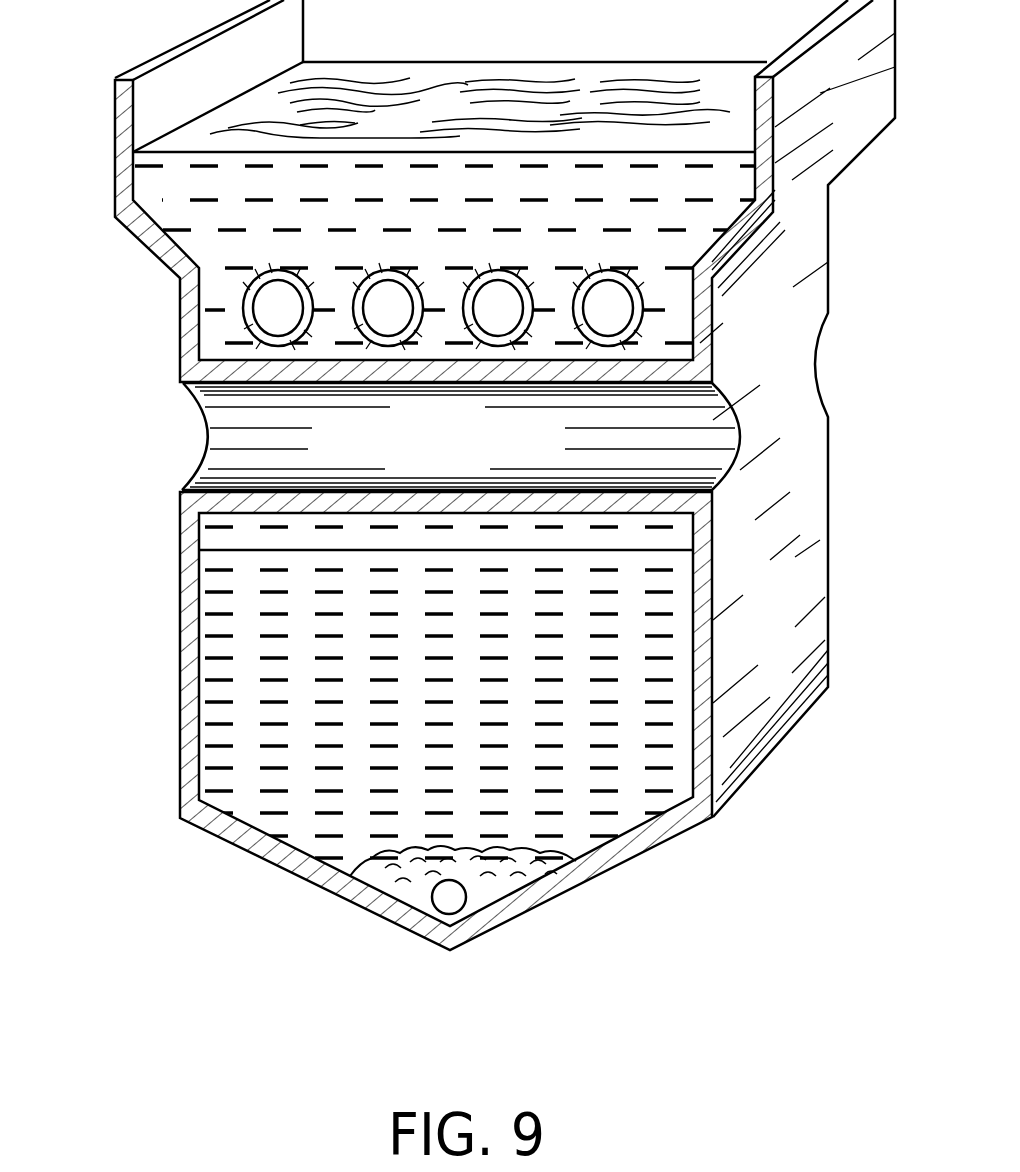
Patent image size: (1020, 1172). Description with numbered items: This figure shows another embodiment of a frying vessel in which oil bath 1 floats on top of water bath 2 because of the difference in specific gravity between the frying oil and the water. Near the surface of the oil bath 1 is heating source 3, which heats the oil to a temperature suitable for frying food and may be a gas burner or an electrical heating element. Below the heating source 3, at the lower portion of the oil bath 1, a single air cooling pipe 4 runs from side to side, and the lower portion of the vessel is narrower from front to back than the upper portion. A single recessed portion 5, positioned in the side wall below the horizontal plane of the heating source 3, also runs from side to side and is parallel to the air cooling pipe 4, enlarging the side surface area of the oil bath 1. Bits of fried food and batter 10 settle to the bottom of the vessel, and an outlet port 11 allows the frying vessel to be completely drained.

The oil bath 1 is at (163, 187).
The water bath 2 is at (222, 776).
The heating source 3 is at (247, 300).
The air cooling pipe 4 is at (302, 423).
The recessed portion 5 is at (808, 380).
The bits of fried food and batter 10 is at (412, 893).
The outlet port 11 is at (453, 905).